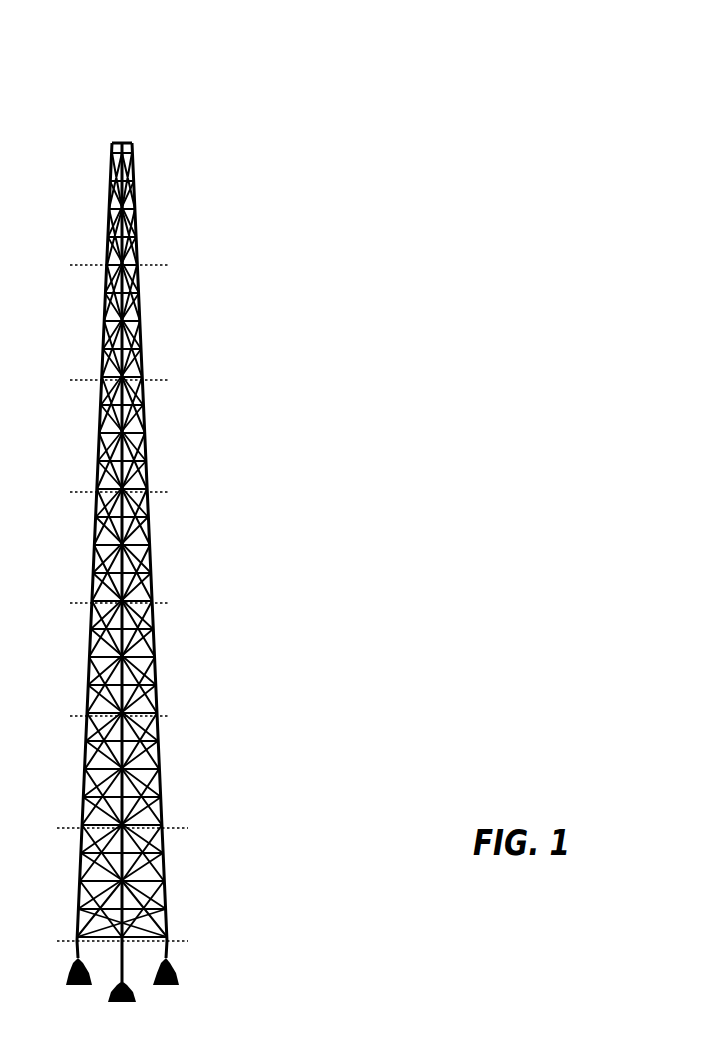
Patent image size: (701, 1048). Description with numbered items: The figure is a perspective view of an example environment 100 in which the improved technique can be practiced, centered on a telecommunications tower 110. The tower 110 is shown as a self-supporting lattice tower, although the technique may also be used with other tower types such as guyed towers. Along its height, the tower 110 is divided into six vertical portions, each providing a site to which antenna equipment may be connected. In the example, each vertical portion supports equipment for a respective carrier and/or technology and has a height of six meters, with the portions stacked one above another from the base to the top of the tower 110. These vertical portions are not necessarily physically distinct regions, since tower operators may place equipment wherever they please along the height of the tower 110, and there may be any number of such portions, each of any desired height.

The environment 100 is at (523, 102).
The tower 110 is at (240, 241).